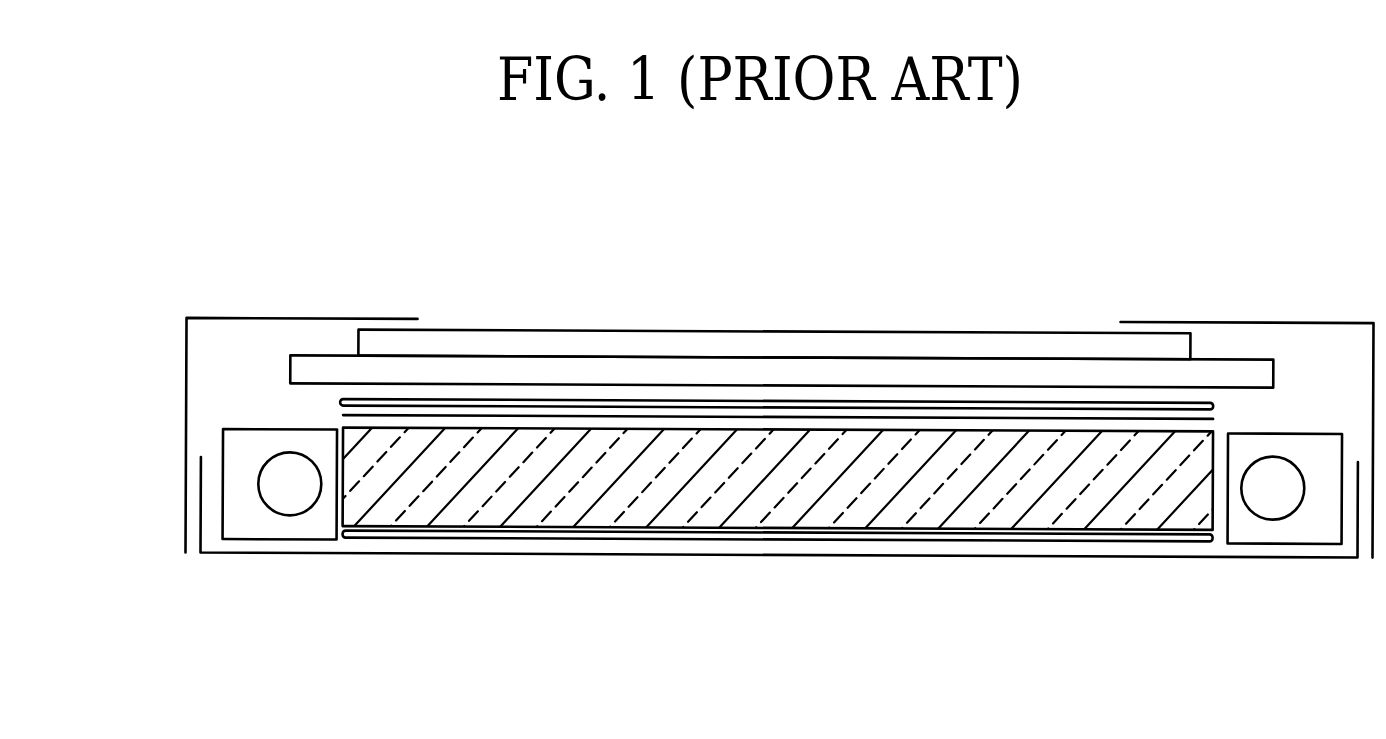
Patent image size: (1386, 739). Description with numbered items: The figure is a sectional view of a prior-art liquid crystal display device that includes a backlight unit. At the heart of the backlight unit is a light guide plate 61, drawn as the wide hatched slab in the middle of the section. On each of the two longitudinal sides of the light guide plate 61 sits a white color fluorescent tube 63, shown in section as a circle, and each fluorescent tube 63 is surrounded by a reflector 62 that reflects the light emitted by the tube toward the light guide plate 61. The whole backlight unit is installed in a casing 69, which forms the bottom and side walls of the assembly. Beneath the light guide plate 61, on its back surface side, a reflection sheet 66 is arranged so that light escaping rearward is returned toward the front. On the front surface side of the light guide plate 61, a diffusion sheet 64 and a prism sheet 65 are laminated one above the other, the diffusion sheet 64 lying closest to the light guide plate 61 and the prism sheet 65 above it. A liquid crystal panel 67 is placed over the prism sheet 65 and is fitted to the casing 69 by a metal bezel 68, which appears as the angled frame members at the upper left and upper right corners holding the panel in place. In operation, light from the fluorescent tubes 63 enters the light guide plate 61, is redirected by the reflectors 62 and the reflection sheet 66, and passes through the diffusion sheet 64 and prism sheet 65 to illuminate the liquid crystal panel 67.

The light guide plate 61 is at (935, 490).
The reflector 62 is at (318, 542).
The white color fluorescent tube 63 is at (275, 490).
The diffusion sheet 64 is at (651, 417).
The prism sheet 65 is at (818, 401).
The reflection sheet 66 is at (1025, 540).
The liquid crystal panel 67 is at (982, 345).
The metal bezel 68 is at (273, 320).
The casing 69 is at (715, 555).